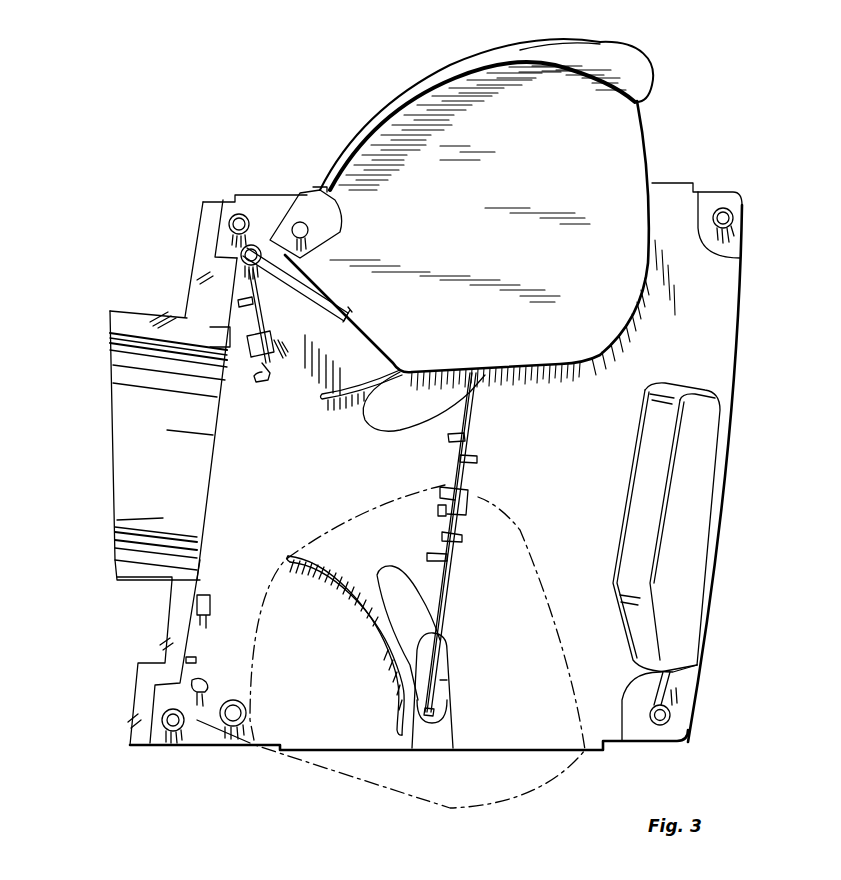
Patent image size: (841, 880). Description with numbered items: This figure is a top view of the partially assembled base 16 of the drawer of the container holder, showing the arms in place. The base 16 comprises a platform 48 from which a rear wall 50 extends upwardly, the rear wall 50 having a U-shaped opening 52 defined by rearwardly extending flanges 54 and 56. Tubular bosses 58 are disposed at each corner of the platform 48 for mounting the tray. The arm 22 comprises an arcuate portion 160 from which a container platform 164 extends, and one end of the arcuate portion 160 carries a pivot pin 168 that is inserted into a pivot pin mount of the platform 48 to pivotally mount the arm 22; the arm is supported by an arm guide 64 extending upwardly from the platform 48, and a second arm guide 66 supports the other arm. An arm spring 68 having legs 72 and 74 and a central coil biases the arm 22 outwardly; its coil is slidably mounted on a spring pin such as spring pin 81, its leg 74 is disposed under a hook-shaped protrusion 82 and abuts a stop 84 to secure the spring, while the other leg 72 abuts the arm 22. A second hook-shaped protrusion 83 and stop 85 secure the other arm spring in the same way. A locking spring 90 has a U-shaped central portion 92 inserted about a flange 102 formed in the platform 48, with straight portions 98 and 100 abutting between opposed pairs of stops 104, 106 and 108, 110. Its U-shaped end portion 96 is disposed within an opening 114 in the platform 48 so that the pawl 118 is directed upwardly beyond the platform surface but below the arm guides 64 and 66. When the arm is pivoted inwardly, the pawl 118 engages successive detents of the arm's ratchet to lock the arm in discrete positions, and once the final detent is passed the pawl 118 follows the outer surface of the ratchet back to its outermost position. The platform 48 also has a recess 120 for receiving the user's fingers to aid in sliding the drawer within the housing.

The base 16 is at (755, 337).
The arm 22 is at (655, 75).
The platform 48 is at (745, 289).
The rear wall 50 is at (215, 578).
The U-shaped opening 52 is at (143, 452).
The flange 54 is at (113, 318).
The flange 56 is at (122, 583).
The tubular bosses 58 is at (243, 212).
The arm guide 64 is at (346, 402).
The arm guide 66 is at (330, 578).
The arm spring 68 is at (256, 232).
The leg 72 is at (310, 298).
The leg 74 is at (252, 292).
The spring pin 81 is at (207, 686).
The hook-shaped protrusion 82 is at (260, 340).
The hook-shaped protrusion 83 is at (212, 605).
The stop 84 is at (243, 317).
The stop 85 is at (197, 660).
The locking spring 90 is at (440, 471).
The U-shaped central portion 92 is at (436, 510).
The U-shaped end portion 96 is at (447, 680).
The straight portion 98 is at (474, 420).
The straight portion 100 is at (442, 602).
The flange 102 is at (463, 496).
The stop 104 is at (450, 438).
The stop 106 is at (478, 459).
The stop 108 is at (463, 540).
The stop 110 is at (428, 560).
The opening 114 is at (449, 650).
The pawl 118 is at (440, 712).
The recess 120 is at (700, 477).
The arcuate portion 160 is at (543, 50).
The container platform 164 is at (622, 128).
The pivot pin 168 is at (283, 193).